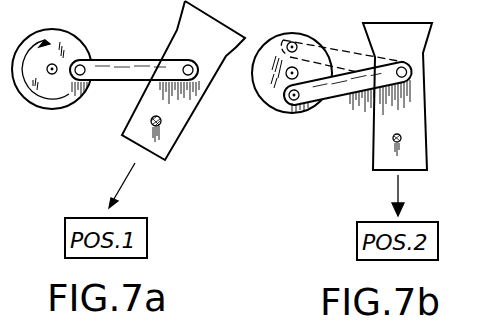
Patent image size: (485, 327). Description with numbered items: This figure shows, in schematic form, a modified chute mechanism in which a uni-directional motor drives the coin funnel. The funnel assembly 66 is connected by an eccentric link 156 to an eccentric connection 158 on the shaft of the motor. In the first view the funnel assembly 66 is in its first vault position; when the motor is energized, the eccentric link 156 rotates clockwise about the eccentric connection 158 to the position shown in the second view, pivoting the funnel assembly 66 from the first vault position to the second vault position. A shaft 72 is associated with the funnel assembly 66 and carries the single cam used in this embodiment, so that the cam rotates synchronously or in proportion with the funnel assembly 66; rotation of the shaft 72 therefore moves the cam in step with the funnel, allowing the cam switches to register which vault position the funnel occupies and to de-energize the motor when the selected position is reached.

In FIG. 7A, the funnel assembly 66 is at (168, 159).
In FIG. 7B, the funnel assembly 66 is at (427, 163).
In FIG. 7A, the shaft 72 is at (162, 123).
In FIG. 7B, the shaft 72 is at (401, 137).
In FIG. 7A, the eccentric link 156 is at (111, 61).
In FIG. 7B, the eccentric link 156 is at (350, 93).
In FIG. 7A, the eccentric connection 158 is at (86, 77).
In FIG. 7B, the eccentric connection 158 is at (295, 111).